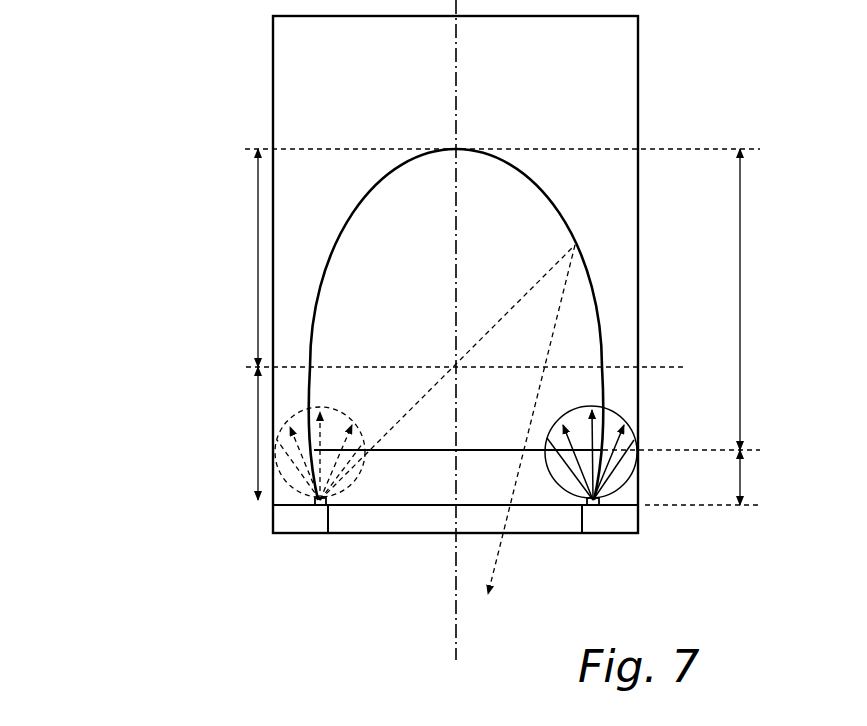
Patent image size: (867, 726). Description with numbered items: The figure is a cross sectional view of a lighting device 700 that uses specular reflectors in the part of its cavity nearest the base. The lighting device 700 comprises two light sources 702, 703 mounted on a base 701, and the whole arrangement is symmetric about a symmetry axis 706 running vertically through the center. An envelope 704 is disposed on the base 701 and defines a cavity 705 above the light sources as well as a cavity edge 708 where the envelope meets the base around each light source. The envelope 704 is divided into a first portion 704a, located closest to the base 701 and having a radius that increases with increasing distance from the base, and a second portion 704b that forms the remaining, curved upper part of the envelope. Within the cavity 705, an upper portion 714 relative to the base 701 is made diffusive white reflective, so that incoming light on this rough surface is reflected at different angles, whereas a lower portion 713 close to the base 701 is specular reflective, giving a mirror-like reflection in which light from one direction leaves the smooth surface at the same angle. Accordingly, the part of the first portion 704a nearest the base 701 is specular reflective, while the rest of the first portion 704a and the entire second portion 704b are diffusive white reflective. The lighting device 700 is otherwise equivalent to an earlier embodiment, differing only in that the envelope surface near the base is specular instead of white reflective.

The lighting device 700 is at (198, 66).
The base 701 is at (522, 520).
The light source 702 is at (320, 506).
The light source 703 is at (591, 507).
The envelope 704 is at (566, 221).
The first portion 704a is at (225, 433).
The second portion 704b is at (225, 258).
The cavity 705 is at (496, 187).
The symmetry axis 706 is at (456, 78).
The cavity edge 708 is at (315, 498).
The lower portion 713 is at (769, 477).
The upper portion 714 is at (769, 299).